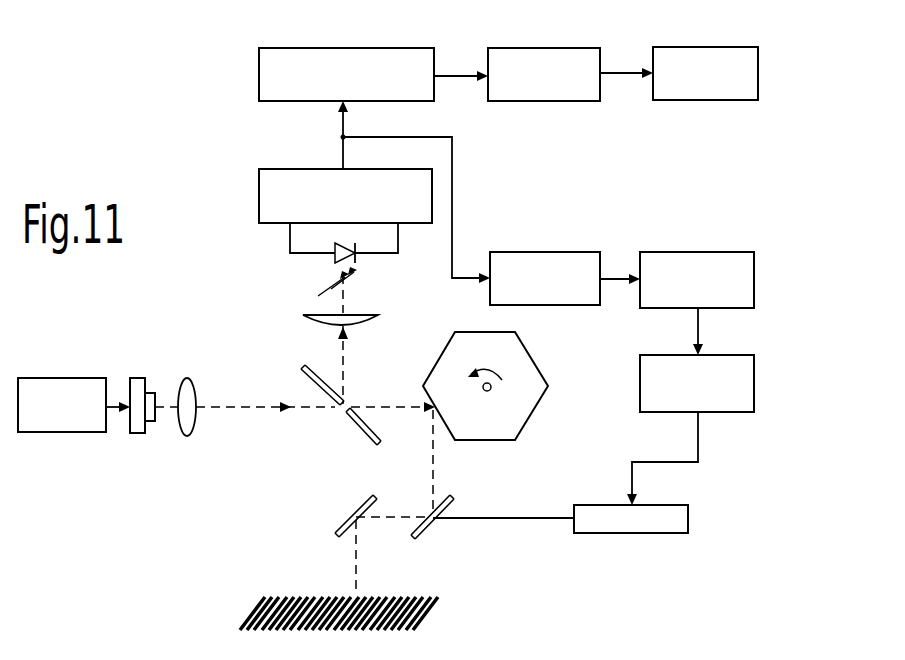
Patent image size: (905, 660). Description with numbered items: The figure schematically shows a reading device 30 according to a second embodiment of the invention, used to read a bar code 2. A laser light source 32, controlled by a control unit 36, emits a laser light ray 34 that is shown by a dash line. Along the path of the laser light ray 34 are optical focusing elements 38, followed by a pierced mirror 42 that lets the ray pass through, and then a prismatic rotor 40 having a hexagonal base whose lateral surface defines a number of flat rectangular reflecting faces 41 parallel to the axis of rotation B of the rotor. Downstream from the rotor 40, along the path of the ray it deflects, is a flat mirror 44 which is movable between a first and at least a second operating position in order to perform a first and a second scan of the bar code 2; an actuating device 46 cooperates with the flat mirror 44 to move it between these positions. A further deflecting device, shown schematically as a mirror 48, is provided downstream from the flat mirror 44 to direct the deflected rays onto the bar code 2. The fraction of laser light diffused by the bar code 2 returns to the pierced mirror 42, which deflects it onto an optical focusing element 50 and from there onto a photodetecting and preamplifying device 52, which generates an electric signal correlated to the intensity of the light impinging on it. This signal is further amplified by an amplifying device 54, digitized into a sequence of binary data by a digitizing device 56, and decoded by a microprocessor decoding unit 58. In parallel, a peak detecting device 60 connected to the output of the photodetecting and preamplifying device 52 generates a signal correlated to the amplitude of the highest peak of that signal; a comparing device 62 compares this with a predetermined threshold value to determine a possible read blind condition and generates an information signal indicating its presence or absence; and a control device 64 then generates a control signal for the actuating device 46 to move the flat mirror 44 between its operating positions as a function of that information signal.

The bar code 2 is at (243, 606).
The reading device 30 is at (150, 64).
The laser light source 32 is at (138, 427).
The laser light ray 34 is at (266, 409).
The control unit 36 is at (41, 423).
The optical focusing elements 38 is at (188, 430).
The prismatic rotor 40 is at (520, 410).
The flat rectangular reflecting faces 41 is at (496, 447).
The pierced mirror 42 is at (356, 436).
The flat mirror 44 is at (428, 530).
The actuating device 46 is at (655, 528).
The mirror 48 is at (345, 517).
The optical focusing element 50 is at (360, 318).
The photodetecting and preamplifying device 52 is at (265, 194).
The amplifying device 54 is at (265, 74).
The digitizing device 56 is at (531, 56).
The microprocessor decoding unit 58 is at (707, 59).
The peak detecting device 60 is at (541, 262).
The comparing device 62 is at (697, 265).
The control device 64 is at (737, 398).
The axis of rotation B is at (490, 392).